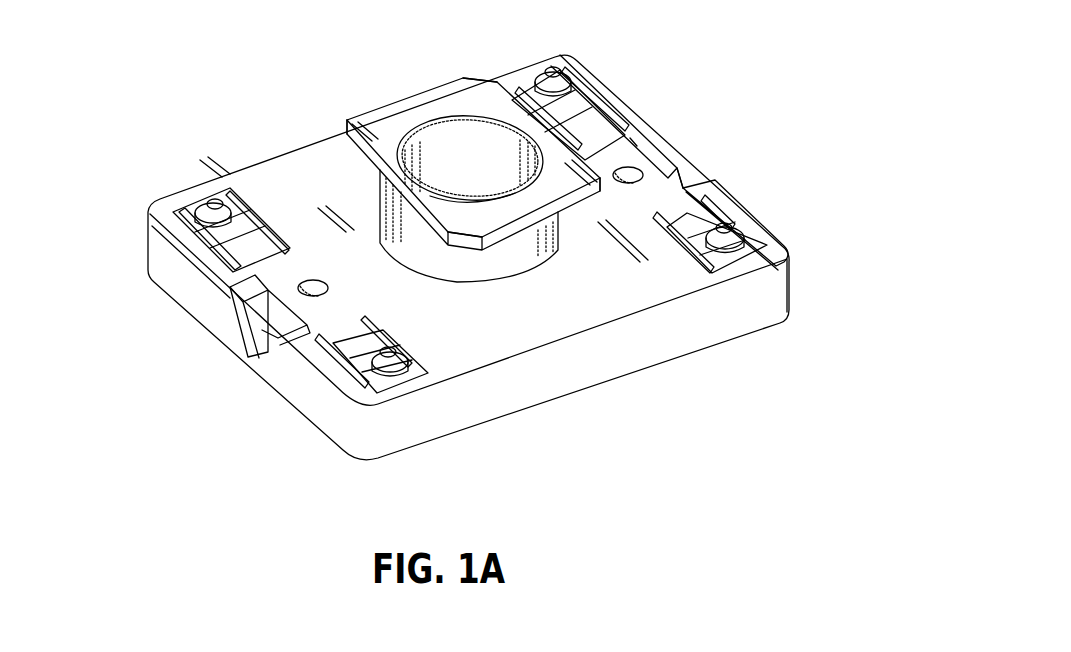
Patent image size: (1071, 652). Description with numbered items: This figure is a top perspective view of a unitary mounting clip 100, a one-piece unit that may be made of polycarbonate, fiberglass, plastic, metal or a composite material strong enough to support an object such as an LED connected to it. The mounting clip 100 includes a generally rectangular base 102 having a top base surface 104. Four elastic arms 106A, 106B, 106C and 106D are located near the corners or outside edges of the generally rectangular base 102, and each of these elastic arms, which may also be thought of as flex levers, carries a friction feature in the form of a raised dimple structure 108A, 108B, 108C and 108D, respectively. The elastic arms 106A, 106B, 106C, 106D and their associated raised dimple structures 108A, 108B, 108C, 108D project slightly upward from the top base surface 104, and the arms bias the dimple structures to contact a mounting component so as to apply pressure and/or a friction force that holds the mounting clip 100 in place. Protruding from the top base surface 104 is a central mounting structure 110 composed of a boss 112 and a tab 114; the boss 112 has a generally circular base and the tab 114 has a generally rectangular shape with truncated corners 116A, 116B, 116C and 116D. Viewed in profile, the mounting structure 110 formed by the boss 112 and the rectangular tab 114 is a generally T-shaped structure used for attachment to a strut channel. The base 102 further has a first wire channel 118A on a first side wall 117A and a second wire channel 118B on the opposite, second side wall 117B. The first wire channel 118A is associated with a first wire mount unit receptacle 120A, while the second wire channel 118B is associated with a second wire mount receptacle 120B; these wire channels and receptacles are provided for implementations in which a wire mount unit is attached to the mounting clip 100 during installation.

The mounting clip 100 is at (738, 72).
The base 102 is at (592, 394).
The top base surface 104 is at (584, 308).
The elastic arm 106A is at (710, 228).
The elastic arm 106B is at (560, 110).
The elastic arm 106C is at (205, 220).
The elastic arm 106D is at (368, 358).
The raised dimple structure 108A is at (787, 262).
The raised dimple structure 108B is at (575, 72).
The raised dimple structure 108C is at (152, 237).
The raised dimple structure 108D is at (386, 374).
The central mounting structure 110 is at (324, 182).
The boss 112 is at (458, 270).
The tab 114 is at (425, 95).
The truncated corner 116A is at (346, 128).
The truncated corner 116B is at (483, 79).
The truncated corner 116C is at (600, 187).
The truncated corner 116D is at (470, 252).
The first side wall 117A is at (170, 272).
The second side wall 117B is at (718, 182).
The first wire channel 118A is at (263, 366).
The second wire channel 118B is at (692, 170).
The first wire mount unit receptacle 120A is at (313, 298).
The second wire mount receptacle 120B is at (632, 178).